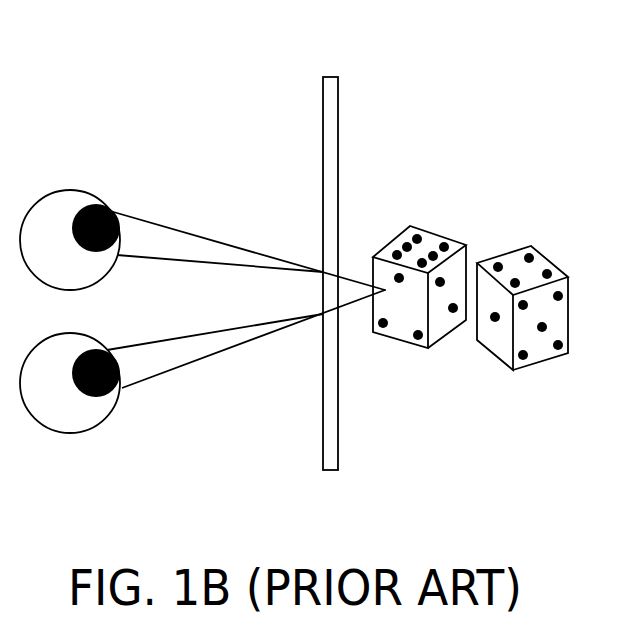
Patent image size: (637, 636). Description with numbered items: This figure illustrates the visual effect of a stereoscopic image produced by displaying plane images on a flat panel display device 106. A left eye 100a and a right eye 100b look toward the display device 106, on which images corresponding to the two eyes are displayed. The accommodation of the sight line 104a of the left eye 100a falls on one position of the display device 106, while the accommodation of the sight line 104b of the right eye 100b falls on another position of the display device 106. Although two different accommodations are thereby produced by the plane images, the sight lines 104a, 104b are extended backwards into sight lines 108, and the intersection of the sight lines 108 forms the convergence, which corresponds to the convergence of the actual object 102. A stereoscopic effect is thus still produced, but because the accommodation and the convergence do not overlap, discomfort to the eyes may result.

The left eye 100a is at (70, 190).
The right eye 100b is at (70, 432).
The object 102 is at (437, 233).
The sight line of the left eye 104a is at (320, 247).
The sight line of the right eye 104b is at (315, 336).
The flat panel display device 106 is at (330, 93).
The extended sight lines 108 is at (352, 280).